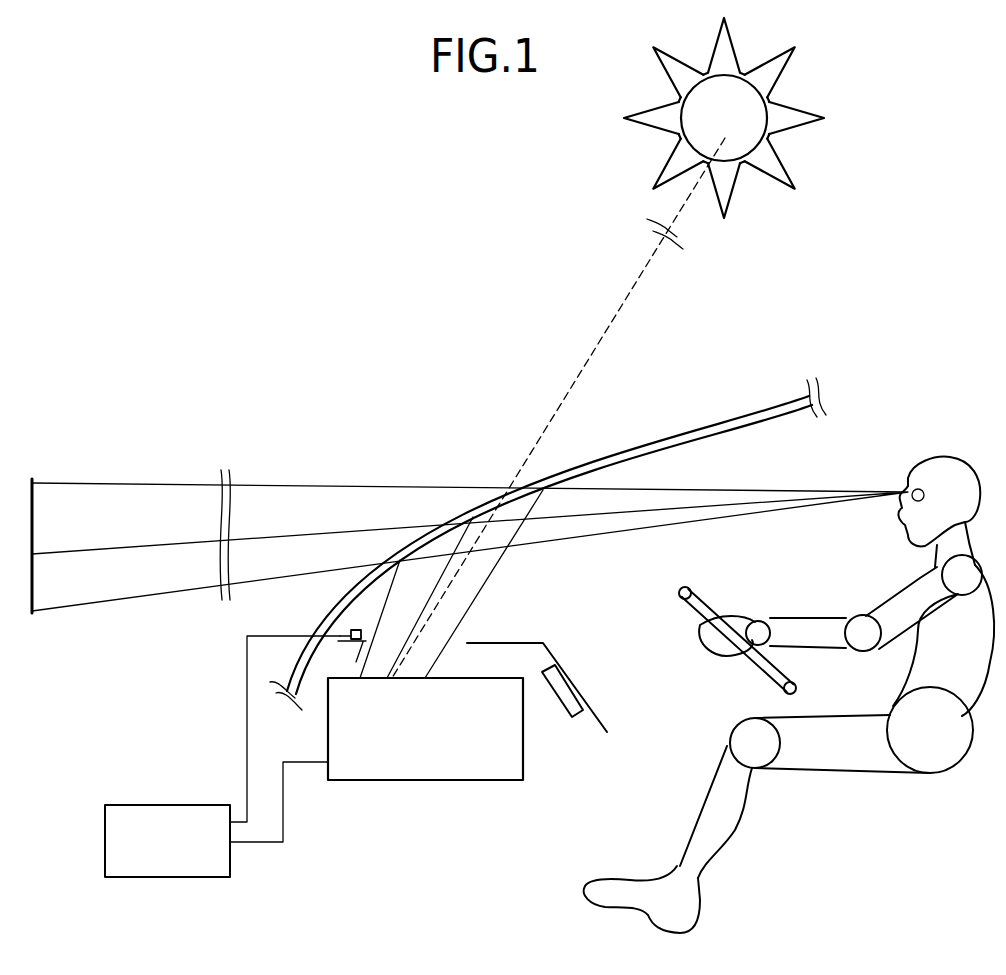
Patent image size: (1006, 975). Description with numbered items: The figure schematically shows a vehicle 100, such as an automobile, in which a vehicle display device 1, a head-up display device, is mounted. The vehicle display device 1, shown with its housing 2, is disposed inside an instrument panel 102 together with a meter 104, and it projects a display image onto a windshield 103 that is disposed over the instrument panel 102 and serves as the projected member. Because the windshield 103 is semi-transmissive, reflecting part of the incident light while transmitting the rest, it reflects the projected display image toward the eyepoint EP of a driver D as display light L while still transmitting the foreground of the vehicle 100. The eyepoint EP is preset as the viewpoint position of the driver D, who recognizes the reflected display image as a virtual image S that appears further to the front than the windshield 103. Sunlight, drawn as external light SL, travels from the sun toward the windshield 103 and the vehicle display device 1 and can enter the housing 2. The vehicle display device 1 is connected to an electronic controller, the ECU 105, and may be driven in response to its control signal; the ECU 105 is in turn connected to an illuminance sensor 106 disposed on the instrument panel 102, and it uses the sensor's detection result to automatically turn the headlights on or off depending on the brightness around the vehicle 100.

The vehicle 100 is at (292, 332).
The vehicle display device 1 is at (388, 793).
The housing 2 is at (328, 745).
The windshield 103 is at (688, 443).
The instrument panel 102 is at (600, 712).
The meter 104 is at (552, 693).
The electronic controller (ECU) 105 is at (130, 805).
The illuminance sensor 106 is at (352, 630).
The virtual image S is at (35, 508).
The external light SL is at (586, 357).
The display light L is at (377, 627).
The eyepoint EP is at (905, 488).
The driver D is at (958, 458).